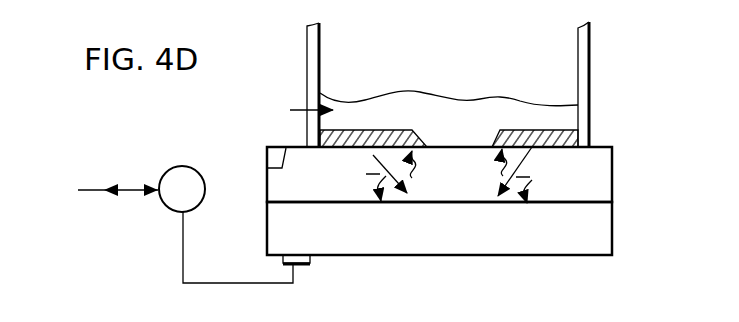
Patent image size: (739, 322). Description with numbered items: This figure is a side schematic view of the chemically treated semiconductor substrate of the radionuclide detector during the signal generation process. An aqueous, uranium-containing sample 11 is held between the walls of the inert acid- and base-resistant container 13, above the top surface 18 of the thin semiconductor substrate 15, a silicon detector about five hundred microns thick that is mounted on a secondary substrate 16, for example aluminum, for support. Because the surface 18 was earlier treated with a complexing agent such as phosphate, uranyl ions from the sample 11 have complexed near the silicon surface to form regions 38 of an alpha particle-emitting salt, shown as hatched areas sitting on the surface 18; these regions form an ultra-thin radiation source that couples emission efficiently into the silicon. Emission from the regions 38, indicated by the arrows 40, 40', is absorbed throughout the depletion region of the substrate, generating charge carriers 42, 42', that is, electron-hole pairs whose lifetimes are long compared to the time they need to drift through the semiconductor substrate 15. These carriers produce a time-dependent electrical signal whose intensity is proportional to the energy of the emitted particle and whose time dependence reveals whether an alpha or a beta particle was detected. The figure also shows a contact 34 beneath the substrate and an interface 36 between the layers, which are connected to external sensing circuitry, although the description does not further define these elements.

The sample 11 is at (384, 101).
The container 13 is at (578, 40).
The semiconductor substrate 15 is at (600, 186).
The secondary substrate 16 is at (603, 236).
The top surface 18 is at (266, 165).
The bottom electrode 34 is at (301, 266).
The interface 36 is at (395, 255).
The regions of alpha particle-emitting salt 38 is at (505, 130).
The emission arrows 40 is at (333, 146).
The emission arrows 40' is at (534, 171).
The charge carriers 42 is at (458, 163).
The charge carriers 42' is at (461, 189).